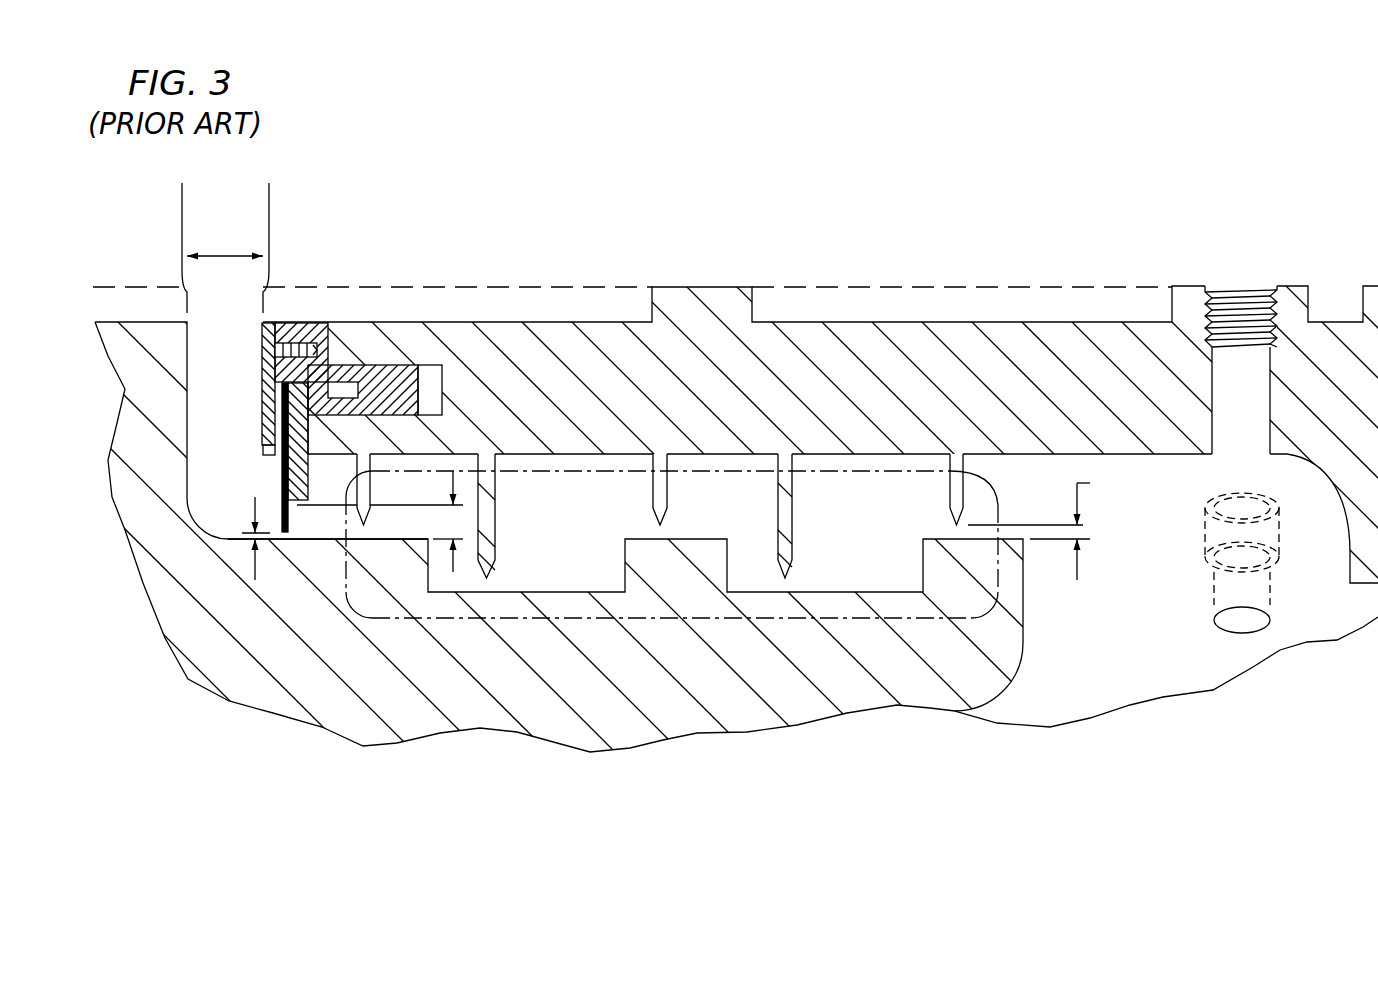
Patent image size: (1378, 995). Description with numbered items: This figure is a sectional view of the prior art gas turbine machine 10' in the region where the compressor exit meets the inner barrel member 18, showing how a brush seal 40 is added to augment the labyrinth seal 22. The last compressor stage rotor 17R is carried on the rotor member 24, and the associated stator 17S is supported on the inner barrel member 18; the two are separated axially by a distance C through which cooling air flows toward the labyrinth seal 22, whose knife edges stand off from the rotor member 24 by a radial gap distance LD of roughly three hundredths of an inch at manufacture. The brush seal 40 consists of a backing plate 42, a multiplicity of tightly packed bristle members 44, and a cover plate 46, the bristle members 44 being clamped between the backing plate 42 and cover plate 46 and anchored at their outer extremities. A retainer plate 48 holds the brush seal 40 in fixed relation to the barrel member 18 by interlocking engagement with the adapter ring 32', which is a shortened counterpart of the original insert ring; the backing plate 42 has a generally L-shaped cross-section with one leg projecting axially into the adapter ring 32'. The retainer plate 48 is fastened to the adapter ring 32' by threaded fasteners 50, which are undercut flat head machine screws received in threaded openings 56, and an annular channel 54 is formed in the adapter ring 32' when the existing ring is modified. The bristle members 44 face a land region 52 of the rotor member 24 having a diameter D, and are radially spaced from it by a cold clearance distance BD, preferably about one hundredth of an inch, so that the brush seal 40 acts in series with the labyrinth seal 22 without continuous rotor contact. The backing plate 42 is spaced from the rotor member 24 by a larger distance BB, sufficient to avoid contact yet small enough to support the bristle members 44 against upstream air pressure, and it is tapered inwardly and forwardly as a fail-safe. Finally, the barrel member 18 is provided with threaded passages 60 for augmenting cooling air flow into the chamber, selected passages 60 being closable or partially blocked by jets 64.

The machine 10' is at (736, 552).
The last stage rotor 17R is at (172, 287).
The stator 17S is at (385, 287).
The inner barrel member 18 is at (894, 397).
The labyrinth seal 22 is at (1000, 490).
The rotor member 24 is at (706, 674).
The adapter ring 32' is at (463, 390).
The brush seal 40 is at (282, 474).
The backing plate 42 is at (303, 486).
The bristle members 44 is at (282, 490).
The cover plate 46 is at (275, 455).
The retainer plate 48 is at (262, 386).
The threaded fasteners 50 is at (262, 348).
The land region 52 is at (300, 536).
The annular channel 54 is at (353, 383).
The threaded openings 56 is at (310, 343).
The threaded passages 60 is at (1268, 433).
The jets 64 is at (1280, 530).
The distance C is at (225, 248).
The distance BB is at (452, 521).
The distance BD is at (258, 552).
The diameter D is at (1029, 548).
The radial gap distance LD is at (1105, 481).